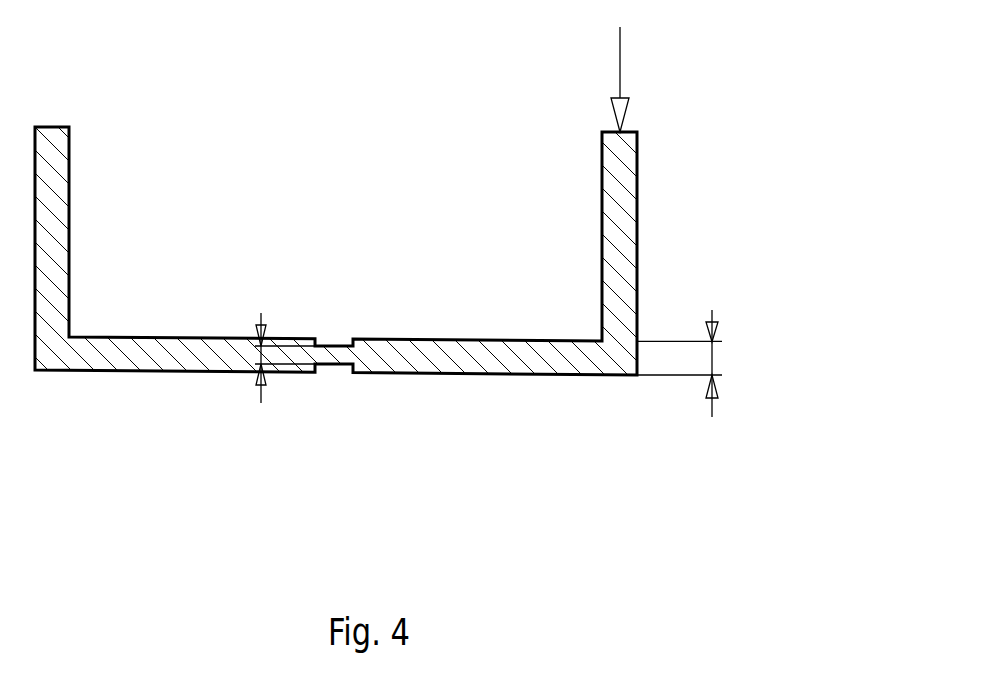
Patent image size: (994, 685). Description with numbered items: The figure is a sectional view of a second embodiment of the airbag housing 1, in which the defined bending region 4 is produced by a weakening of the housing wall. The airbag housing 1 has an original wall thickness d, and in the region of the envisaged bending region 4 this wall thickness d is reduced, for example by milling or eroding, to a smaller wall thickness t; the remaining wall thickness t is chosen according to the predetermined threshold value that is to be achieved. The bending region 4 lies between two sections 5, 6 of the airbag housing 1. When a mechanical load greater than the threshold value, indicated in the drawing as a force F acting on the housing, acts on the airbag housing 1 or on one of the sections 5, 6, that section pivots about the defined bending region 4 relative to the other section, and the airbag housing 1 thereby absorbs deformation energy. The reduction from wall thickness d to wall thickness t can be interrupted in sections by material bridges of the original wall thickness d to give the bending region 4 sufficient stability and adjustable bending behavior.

The airbag housing 1 is at (497, 342).
The defined bending region 4 is at (334, 364).
The section of the airbag housing 5 is at (113, 353).
The section of the airbag housing 6 is at (584, 358).
The reduced wall thickness t is at (261, 354).
The wall thickness d is at (712, 359).
The force F is at (620, 62).